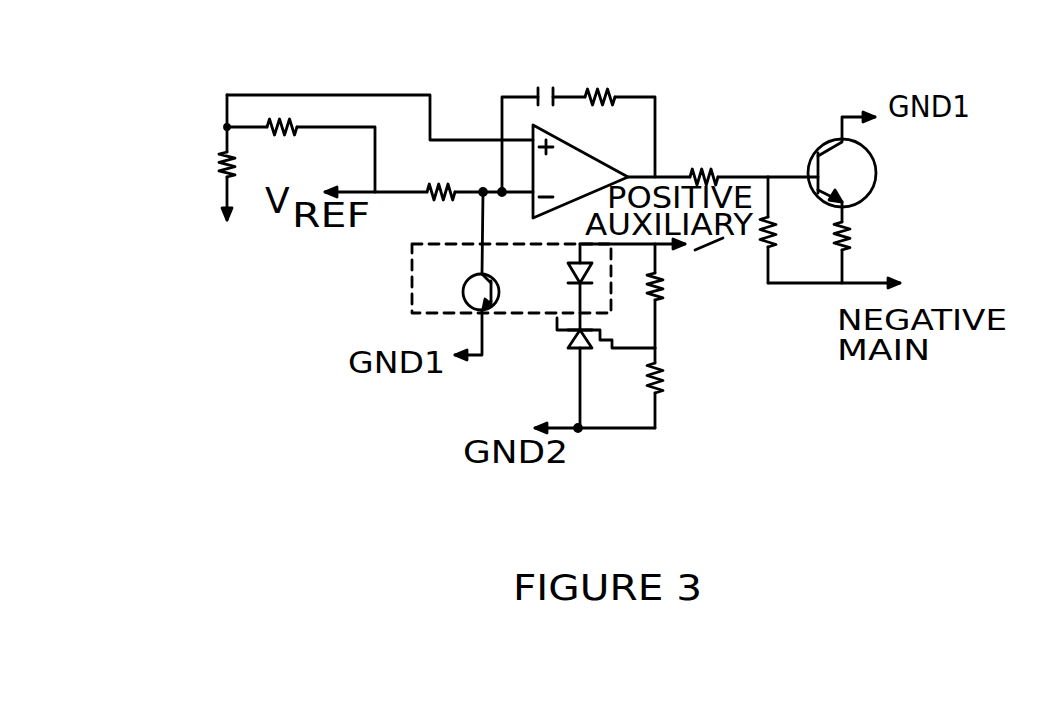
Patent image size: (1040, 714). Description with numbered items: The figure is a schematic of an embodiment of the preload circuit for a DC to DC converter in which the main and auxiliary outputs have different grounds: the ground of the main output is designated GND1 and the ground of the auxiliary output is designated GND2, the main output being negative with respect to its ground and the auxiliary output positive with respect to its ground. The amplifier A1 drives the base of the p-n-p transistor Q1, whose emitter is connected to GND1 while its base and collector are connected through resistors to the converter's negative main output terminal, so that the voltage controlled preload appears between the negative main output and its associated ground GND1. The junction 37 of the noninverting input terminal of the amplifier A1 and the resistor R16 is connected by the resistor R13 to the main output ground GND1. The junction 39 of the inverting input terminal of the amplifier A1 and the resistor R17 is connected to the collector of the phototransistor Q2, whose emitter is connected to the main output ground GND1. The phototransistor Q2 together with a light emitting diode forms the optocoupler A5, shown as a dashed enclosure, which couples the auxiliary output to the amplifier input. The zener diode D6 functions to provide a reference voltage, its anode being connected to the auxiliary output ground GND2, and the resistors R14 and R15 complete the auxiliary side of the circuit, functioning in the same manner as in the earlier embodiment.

The junction 37 is at (227, 127).
The junction 39 is at (500, 189).
The resistor R13 is at (195, 173).
The resistor R16 is at (297, 146).
The resistor R17 is at (441, 210).
The resistor R14 is at (693, 296).
The resistor R15 is at (693, 388).
The amplifier A1 is at (580, 171).
The p-n-p transistor Q1 is at (900, 147).
The phototransistor Q2 is at (482, 275).
The optocoupler A5 is at (405, 253).
The zener diode D6 is at (552, 336).